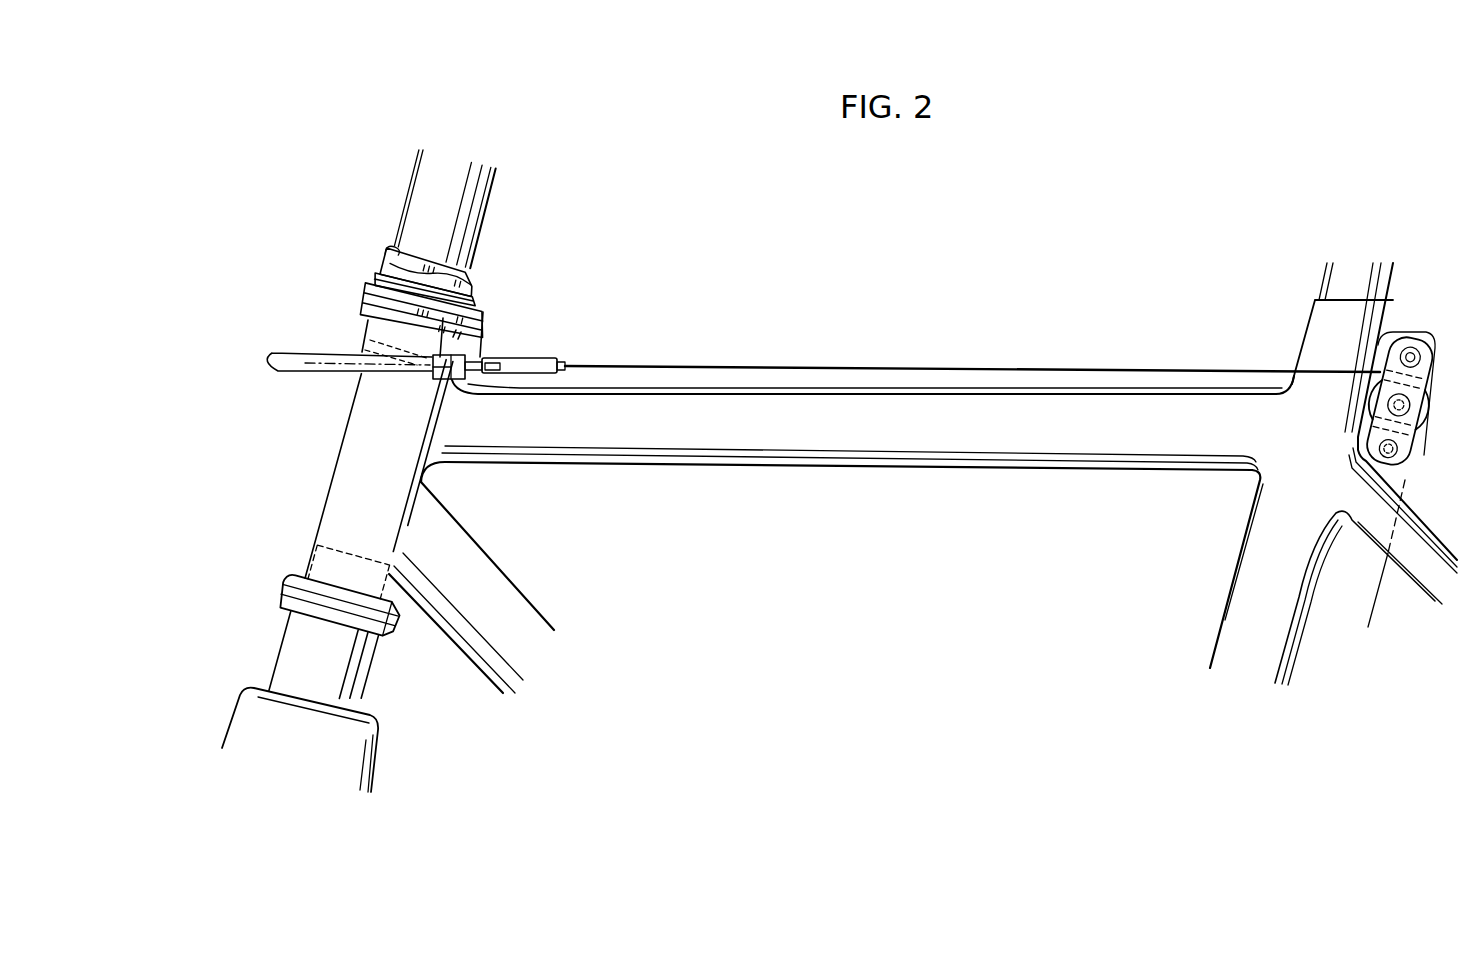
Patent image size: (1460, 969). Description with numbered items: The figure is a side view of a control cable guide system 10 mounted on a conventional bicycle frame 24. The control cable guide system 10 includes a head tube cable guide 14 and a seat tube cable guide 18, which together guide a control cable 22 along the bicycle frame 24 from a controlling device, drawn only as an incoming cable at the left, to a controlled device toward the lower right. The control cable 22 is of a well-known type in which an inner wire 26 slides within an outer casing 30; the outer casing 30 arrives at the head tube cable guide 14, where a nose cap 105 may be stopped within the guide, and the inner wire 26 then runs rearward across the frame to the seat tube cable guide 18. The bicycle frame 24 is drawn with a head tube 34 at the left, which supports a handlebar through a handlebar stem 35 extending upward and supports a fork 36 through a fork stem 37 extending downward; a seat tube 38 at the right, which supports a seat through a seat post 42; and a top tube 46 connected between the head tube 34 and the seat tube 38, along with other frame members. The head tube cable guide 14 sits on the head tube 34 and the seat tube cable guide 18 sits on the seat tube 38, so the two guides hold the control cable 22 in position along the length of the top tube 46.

The control cable guide system 10 is at (825, 259).
The head tube cable guide 14 is at (488, 306).
The seat tube cable guide 18 is at (1436, 351).
The control cable 22 is at (313, 373).
The bicycle frame 24 is at (653, 483).
The inner wire 26 is at (888, 365).
The outer casing 30 is at (330, 361).
The head tube 34 is at (328, 494).
The handlebar stem 35 is at (486, 208).
The fork 36 is at (366, 742).
The fork stem 37 is at (361, 664).
The seat tube 38 is at (1245, 577).
The seat post 42 is at (1332, 284).
The top tube 46 is at (885, 466).
The nose cap 105 is at (472, 382).